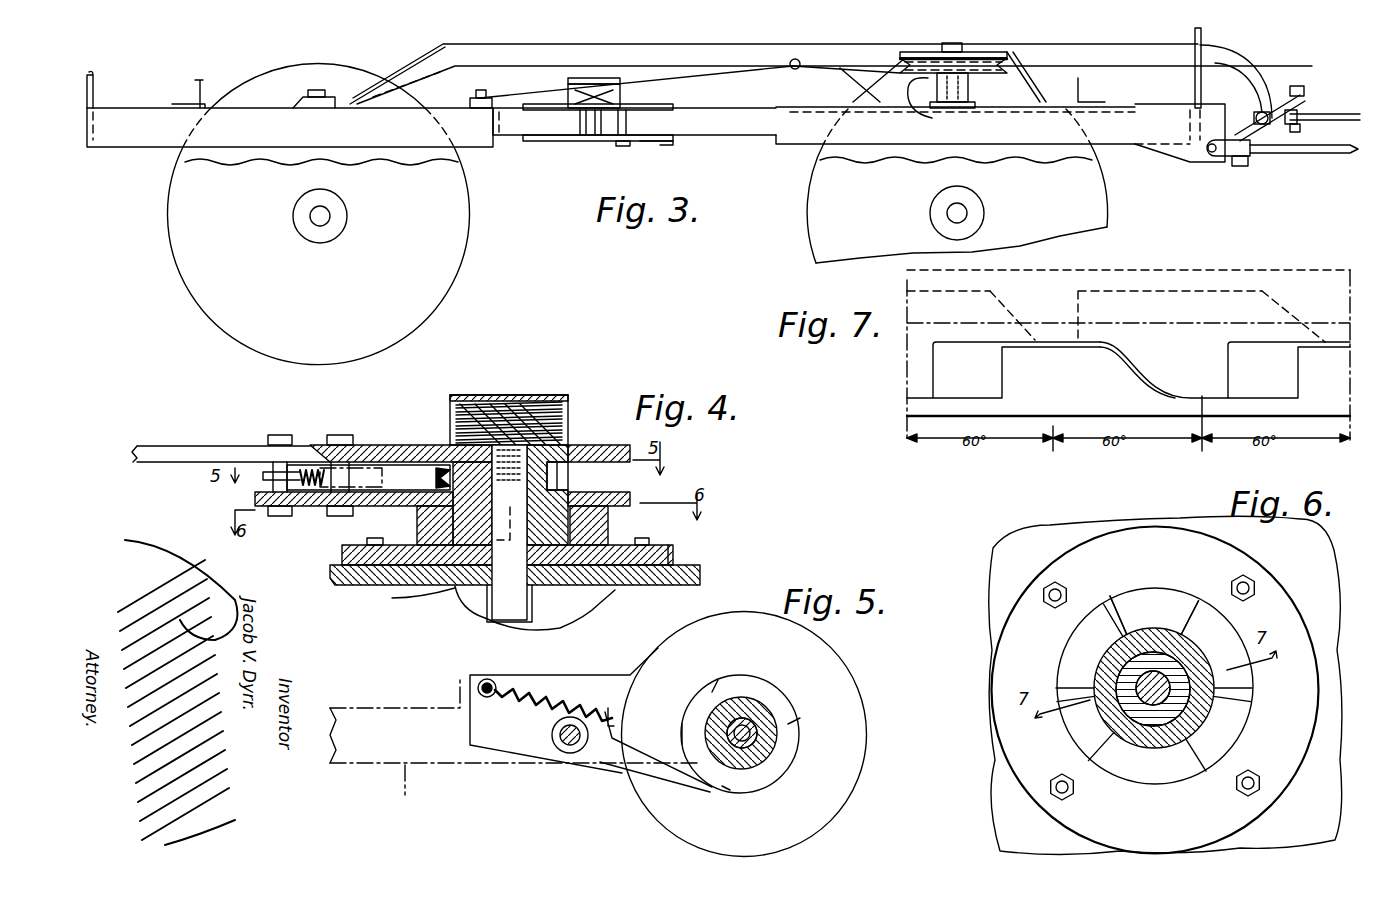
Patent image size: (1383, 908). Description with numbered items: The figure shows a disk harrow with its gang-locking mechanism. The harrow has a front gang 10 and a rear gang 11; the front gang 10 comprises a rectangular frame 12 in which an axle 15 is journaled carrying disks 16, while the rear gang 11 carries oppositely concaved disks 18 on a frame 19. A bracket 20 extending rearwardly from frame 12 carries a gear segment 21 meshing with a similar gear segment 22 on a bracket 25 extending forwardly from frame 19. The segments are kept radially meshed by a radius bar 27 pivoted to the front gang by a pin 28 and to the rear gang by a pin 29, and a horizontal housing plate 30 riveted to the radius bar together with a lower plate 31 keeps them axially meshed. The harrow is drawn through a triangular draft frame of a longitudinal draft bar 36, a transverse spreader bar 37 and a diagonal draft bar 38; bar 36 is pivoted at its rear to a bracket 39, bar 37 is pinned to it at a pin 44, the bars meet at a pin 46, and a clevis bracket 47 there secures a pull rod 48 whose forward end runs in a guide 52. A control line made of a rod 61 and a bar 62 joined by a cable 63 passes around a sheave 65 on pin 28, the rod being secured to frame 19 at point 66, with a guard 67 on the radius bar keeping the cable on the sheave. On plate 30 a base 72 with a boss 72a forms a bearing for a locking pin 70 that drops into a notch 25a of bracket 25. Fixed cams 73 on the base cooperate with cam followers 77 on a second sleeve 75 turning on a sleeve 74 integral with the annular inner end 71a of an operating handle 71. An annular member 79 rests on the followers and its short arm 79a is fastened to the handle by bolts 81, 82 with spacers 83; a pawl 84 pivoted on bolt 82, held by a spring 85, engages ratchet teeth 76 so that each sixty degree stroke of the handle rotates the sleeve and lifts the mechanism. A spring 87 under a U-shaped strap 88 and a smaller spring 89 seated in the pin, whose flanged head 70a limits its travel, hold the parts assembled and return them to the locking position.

In FIG. 3, the front gang 10 is at (1126, 154).
In FIG. 3, the rear gang 11 is at (157, 157).
In FIG. 3, the rectangular frame 12 is at (877, 157).
In FIG. 3, the axle 15 is at (332, 216).
In FIG. 3, the disks 16 is at (807, 210).
In FIG. 3, the disks 18 is at (318, 214).
In FIG. 3, the frame 19 is at (290, 127).
In FIG. 3, the bracket 20 is at (748, 118).
In FIG. 3, the gear segment 21 is at (600, 141).
In FIG. 3, the gear segment 22 is at (583, 141).
In FIG. 3, the bracket 25 is at (525, 137).
In FIG. 4, the bracket 25 is at (468, 608).
In FIG. 4, the notch 25a is at (590, 610).
In FIG. 3, the radius bar 27 is at (846, 84).
In FIG. 3, the pin 28 is at (965, 45).
In FIG. 3, the pin 29 is at (318, 90).
In FIG. 3, the housing plate 30 is at (672, 107).
In FIG. 4, the housing plate 30 is at (700, 576).
In FIG. 6, the housing plate 30 is at (1037, 553).
In FIG. 3, the plate 31 is at (660, 143).
In FIG. 3, the longitudinal draft bar 36 is at (1322, 154).
In FIG. 3, the transverse spreader bar 37 is at (1265, 128).
In FIG. 3, the diagonal draft bar 38 is at (1325, 120).
In FIG. 3, the bracket 39 is at (1172, 152).
In FIG. 3, the pin 44 is at (1238, 168).
In FIG. 3, the pin 46 is at (1305, 100).
In FIG. 3, the clevis bracket 47 is at (1270, 100).
In FIG. 3, the pull rod 48 is at (1085, 45).
In FIG. 3, the guide 52 is at (1203, 38).
In FIG. 3, the rod 61 is at (752, 71).
In FIG. 3, the bar 62 is at (1115, 66).
In FIG. 3, the cable 63 is at (897, 62).
In FIG. 3, the sheave 65 is at (975, 84).
In FIG. 3, the attachment point 66 is at (488, 96).
In FIG. 3, the guard 67 is at (929, 108).
In FIG. 4, the locking pin 70 is at (497, 470).
In FIG. 5, the locking pin 70 is at (772, 733).
In FIG. 6, the locking pin 70 is at (1176, 700).
In FIG. 4, the flanged head 70a is at (455, 393).
In FIG. 4, the operating handle 71 is at (180, 463).
In FIG. 5, the operating handle 71 is at (515, 747).
In FIG. 4, the annular inner end 71a is at (633, 452).
In FIG. 4, the base 72 is at (676, 553).
In FIG. 6, the base 72 is at (1155, 690).
In FIG. 7, the base 72 is at (1315, 410).
In FIG. 4, the boss 72a is at (408, 597).
In FIG. 4, the fixed cams 73 is at (608, 528).
In FIG. 6, the fixed cams 73 is at (1154, 686).
In FIG. 7, the fixed cams 73 is at (1128, 370).
In FIG. 4, the sleeve 74 is at (560, 475).
In FIG. 5, the sleeve 74 is at (760, 717).
In FIG. 6, the sleeve 74 is at (1157, 662).
In FIG. 4, the second sleeve 75 is at (548, 460).
In FIG. 5, the second sleeve 75 is at (765, 728).
In FIG. 6, the second sleeve 75 is at (1167, 737).
In FIG. 7, the second sleeve 75 is at (1180, 323).
In FIG. 4, the ratchet teeth 76 is at (578, 452).
In FIG. 5, the ratchet teeth 76 is at (798, 748).
In FIG. 4, the cam followers 77 is at (417, 517).
In FIG. 6, the cam followers 77 is at (1133, 662).
In FIG. 7, the cam followers 77 is at (1157, 344).
In FIG. 4, the annular member 79 is at (633, 500).
In FIG. 5, the annular member 79 is at (680, 822).
In FIG. 4, the short arm 79a is at (322, 508).
In FIG. 5, the short arm 79a is at (512, 748).
In FIG. 4, the bolt 81 is at (280, 436).
In FIG. 5, the bolt 81 is at (485, 680).
In FIG. 4, the bolt 82 is at (342, 436).
In FIG. 5, the bolt 82 is at (570, 755).
In FIG. 5, the spacers 83 is at (478, 688).
In FIG. 4, the pawl 84 is at (400, 465).
In FIG. 5, the pawl 84 is at (636, 762).
In FIG. 4, the spring 85 is at (312, 477).
In FIG. 5, the spring 85 is at (560, 712).
In FIG. 4, the spring 87 is at (545, 425).
In FIG. 3, the U-shaped strap 88 is at (615, 78).
In FIG. 4, the U-shaped strap 88 is at (468, 393).
In FIG. 4, the spring 89 is at (530, 400).